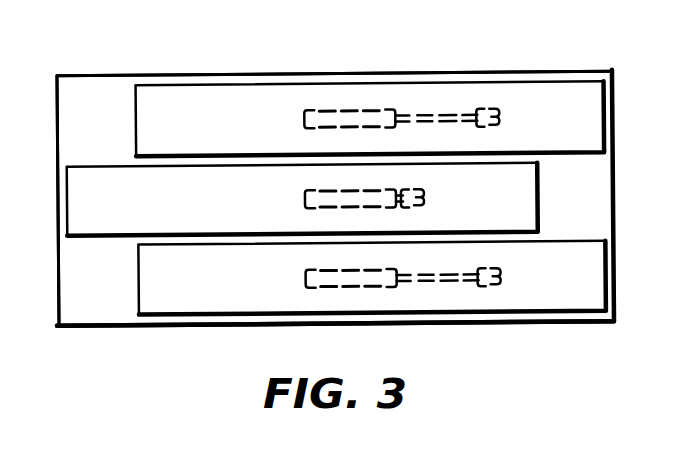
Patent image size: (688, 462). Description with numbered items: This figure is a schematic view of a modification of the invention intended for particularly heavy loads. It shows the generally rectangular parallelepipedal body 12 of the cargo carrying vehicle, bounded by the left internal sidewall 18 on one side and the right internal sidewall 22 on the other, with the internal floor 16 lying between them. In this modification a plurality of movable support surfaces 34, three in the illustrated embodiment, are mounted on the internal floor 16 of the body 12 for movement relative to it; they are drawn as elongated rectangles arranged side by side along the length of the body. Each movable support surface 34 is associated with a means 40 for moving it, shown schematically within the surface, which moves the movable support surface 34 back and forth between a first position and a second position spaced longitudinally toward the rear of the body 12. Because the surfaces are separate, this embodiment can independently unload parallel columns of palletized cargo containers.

The body 12 is at (168, 328).
The internal floor 16 is at (97, 310).
The left internal sidewall 18 is at (258, 329).
The right internal sidewall 22 is at (315, 73).
The movable support surface 34 is at (143, 133).
The means for moving the movable support surface 40 is at (304, 118).